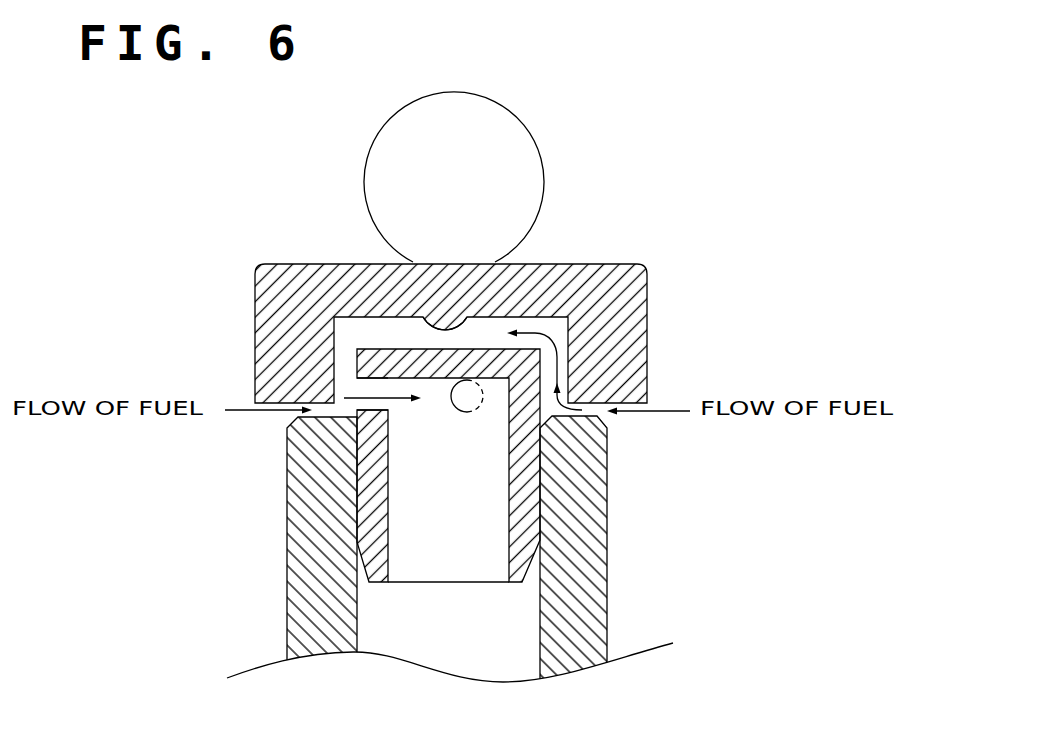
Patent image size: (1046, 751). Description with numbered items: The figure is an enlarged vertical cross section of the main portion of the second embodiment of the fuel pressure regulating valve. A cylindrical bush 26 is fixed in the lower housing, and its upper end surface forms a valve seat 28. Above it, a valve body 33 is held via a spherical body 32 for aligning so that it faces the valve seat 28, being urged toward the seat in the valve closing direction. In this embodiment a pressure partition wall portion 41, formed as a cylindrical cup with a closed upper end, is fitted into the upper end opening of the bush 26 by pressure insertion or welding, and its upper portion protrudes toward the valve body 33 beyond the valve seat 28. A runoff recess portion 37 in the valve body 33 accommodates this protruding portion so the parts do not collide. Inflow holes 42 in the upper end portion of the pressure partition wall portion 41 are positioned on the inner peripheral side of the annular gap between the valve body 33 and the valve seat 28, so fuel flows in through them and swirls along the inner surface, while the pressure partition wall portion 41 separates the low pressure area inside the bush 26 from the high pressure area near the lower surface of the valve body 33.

The bush 26 is at (583, 607).
The valve seat 28 is at (590, 409).
The spherical body 32 is at (536, 142).
The valve body 33 is at (617, 323).
The runoff recess portion 37 is at (423, 319).
The pressure partition wall portion 41 is at (407, 348).
The inflow holes 42 is at (373, 388).